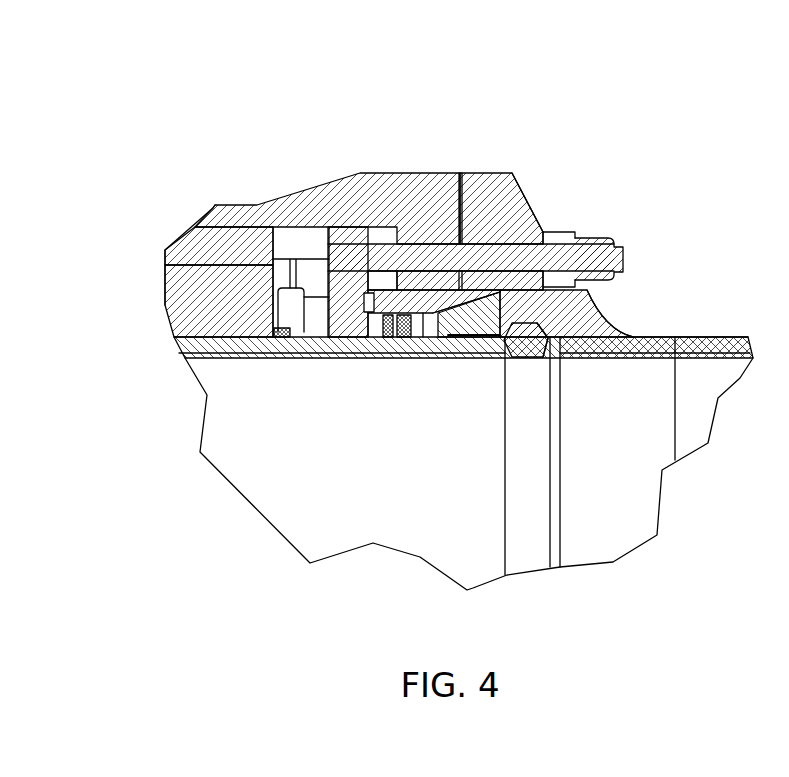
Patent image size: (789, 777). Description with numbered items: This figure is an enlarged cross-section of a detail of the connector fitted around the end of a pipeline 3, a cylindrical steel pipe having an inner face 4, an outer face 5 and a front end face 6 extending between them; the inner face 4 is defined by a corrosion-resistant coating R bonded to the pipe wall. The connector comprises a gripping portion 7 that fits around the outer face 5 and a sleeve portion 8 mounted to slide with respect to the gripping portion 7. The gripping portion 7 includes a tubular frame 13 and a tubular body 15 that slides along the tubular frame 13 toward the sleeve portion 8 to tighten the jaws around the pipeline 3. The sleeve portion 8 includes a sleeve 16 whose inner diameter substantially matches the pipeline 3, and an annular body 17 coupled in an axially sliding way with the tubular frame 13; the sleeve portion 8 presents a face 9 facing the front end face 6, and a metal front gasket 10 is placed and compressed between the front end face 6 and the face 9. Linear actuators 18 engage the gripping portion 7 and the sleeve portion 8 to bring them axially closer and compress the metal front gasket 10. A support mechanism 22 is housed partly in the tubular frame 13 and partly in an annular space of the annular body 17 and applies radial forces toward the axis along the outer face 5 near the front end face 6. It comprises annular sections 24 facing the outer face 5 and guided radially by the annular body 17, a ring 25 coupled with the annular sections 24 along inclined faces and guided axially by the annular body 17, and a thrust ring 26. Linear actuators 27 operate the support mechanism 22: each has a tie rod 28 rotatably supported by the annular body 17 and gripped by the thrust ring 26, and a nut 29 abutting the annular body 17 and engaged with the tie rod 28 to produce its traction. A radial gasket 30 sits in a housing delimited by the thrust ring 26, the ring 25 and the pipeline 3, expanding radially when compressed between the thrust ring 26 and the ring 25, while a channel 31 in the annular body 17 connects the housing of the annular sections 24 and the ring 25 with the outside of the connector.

The pipeline 3 is at (181, 438).
The inner face 4 is at (295, 358).
The coating R is at (218, 358).
The outer face 5 is at (200, 333).
The tubular body 15 is at (183, 243).
The tubular frame 13 is at (302, 200).
The gripping portion 7 is at (190, 180).
The annular body 17 is at (490, 183).
The channel 31 is at (463, 190).
The ring 25 is at (437, 300).
The thrust ring 26 is at (347, 293).
The support mechanism 22 is at (411, 358).
The radial gasket 30 is at (398, 358).
The annular sections 24 is at (478, 325).
The tie rod 28 is at (528, 197).
The nut 29 is at (597, 237).
The linear actuator 27 is at (617, 128).
The linear actuator 18 is at (688, 233).
The sleeve portion 8 is at (720, 317).
The front end face 6 is at (515, 358).
The face 9 is at (537, 358).
The metal front gasket 10 is at (513, 493).
The sleeve 16 is at (705, 363).